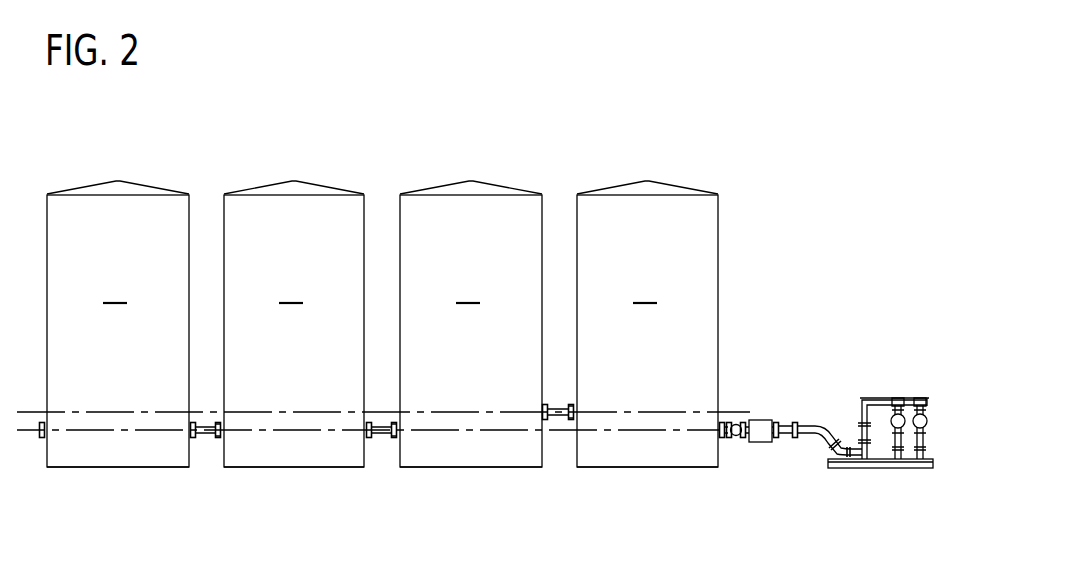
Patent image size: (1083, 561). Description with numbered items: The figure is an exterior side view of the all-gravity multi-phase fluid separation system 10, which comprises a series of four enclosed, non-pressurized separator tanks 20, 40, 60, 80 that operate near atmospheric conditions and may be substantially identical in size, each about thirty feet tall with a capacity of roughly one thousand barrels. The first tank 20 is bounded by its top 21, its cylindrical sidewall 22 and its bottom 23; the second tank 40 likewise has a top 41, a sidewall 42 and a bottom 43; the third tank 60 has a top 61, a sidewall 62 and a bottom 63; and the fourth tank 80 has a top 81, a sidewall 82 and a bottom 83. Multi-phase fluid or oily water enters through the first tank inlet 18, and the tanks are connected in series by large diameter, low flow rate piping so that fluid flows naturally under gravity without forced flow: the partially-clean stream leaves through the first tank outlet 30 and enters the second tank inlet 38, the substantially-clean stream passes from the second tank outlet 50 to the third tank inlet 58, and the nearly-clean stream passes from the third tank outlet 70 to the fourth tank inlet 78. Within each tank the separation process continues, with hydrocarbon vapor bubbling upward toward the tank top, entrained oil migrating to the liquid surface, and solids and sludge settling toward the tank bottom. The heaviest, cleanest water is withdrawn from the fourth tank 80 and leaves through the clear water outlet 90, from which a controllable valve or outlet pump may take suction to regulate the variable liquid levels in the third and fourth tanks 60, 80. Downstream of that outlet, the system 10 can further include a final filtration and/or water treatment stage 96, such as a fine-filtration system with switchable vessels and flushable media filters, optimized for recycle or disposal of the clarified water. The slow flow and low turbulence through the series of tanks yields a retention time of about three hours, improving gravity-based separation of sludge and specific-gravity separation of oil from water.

The all-gravity multi-phase fluid separation system 10 is at (672, 83).
The first tank inlet 18 is at (43, 440).
The first tank 20 is at (163, 182).
The top of first tank 21 is at (90, 187).
The sidewall of first tank 22 is at (116, 287).
The bottom of first tank 23 is at (117, 467).
The first tank outlet 30 is at (192, 422).
The second tank inlet 38 is at (222, 440).
The second tank 40 is at (338, 182).
The top of second tank 41 is at (267, 187).
The sidewall of second tank 42 is at (292, 287).
The bottom of second tank 43 is at (293, 467).
The second tank outlet 50 is at (368, 422).
The third tank inlet 58 is at (398, 440).
The third tank 60 is at (515, 182).
The top of third tank 61 is at (443, 187).
The sidewall of third tank 62 is at (469, 287).
The bottom of third tank 63 is at (470, 467).
The third tank outlet 70 is at (545, 402).
The fourth tank inlet 78 is at (573, 425).
The fourth tank 80 is at (692, 182).
The top of fourth tank 81 is at (620, 187).
The sidewall of fourth tank 82 is at (646, 287).
The bottom of fourth tank 83 is at (646, 467).
The clear water outlet 90 is at (723, 412).
The final filtration and/or water treatment stage 96 is at (882, 393).